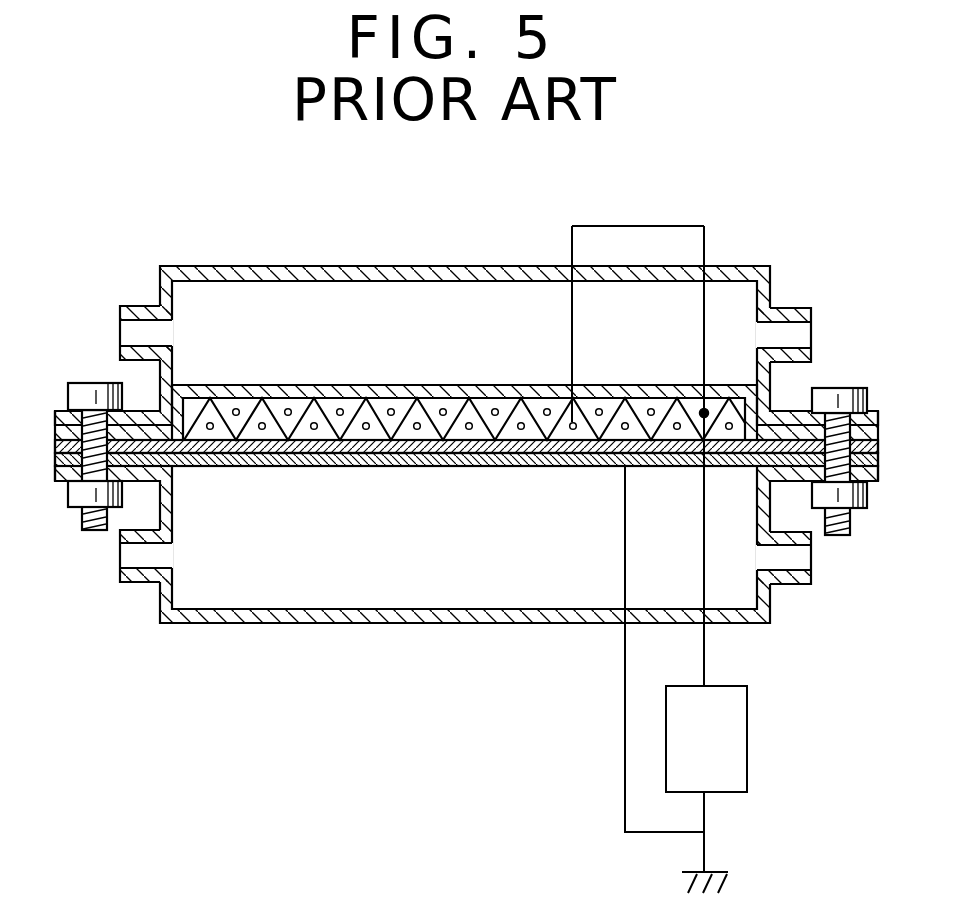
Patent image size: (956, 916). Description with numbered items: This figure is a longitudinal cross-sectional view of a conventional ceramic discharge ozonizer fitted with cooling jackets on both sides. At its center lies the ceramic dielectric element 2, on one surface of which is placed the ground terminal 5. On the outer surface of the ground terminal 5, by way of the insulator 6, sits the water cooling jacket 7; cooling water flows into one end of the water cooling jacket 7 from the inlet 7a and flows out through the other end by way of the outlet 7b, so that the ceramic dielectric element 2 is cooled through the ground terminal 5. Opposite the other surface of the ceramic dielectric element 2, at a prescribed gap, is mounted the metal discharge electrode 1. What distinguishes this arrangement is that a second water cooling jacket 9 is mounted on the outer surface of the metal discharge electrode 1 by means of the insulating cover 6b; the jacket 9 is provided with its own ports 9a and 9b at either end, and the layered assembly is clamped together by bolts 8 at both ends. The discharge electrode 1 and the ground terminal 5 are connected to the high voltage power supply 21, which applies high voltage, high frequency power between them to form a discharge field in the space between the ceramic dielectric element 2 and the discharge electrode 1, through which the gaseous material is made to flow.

The discharge electrode 1 is at (377, 406).
The ceramic dielectric element 2 is at (317, 453).
The ground terminal 5 is at (388, 464).
The insulator 6 is at (56, 457).
The insulating cover 6b is at (260, 385).
The water cooling jacket 7 is at (241, 623).
The inlet 7a is at (137, 562).
The outlet 7b is at (797, 586).
The bolt 8 is at (82, 384).
The water cooling jacket 9 is at (425, 266).
The upper housing inlet port 9a is at (141, 304).
The upper housing outlet port 9b is at (796, 308).
The high voltage power supply 21 is at (742, 745).